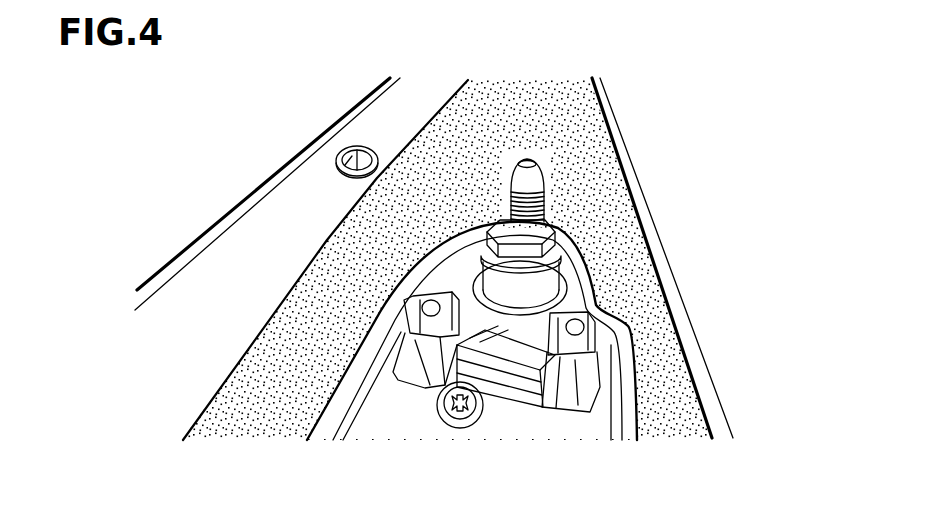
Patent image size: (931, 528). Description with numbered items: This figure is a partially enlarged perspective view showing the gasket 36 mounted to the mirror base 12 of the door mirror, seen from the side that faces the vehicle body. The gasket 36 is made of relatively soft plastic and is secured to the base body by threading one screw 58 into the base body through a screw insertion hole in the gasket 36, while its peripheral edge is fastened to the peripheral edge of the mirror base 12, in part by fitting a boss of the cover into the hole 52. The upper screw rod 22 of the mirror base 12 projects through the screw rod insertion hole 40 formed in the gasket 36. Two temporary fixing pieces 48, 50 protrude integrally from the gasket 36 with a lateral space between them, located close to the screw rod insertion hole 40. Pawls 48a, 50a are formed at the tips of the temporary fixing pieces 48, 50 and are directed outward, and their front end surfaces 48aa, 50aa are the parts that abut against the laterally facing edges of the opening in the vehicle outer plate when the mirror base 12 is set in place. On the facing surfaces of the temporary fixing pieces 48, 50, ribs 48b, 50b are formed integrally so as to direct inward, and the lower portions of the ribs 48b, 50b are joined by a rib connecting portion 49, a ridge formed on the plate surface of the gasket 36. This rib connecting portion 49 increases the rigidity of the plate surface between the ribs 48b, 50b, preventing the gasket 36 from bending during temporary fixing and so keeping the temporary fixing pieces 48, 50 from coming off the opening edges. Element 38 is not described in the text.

The mirror base 12 is at (655, 222).
The upper screw rod 22 is at (547, 178).
The gasket 36 is at (325, 190).
The stippled sealing surface 38 is at (345, 233).
The screw rod insertion hole 40 is at (577, 247).
The temporary fixing piece 48 is at (249, 330).
The pawl 48a is at (427, 315).
The front end surface 48aa is at (452, 330).
The rib 48b is at (448, 383).
The rib connecting portion 49 is at (500, 372).
The temporary fixing piece 50 is at (662, 357).
The pawl 50a is at (578, 338).
The front end surface 50aa is at (590, 350).
The rib 50b is at (577, 420).
The hole 52 is at (357, 150).
The screw 58 is at (462, 412).